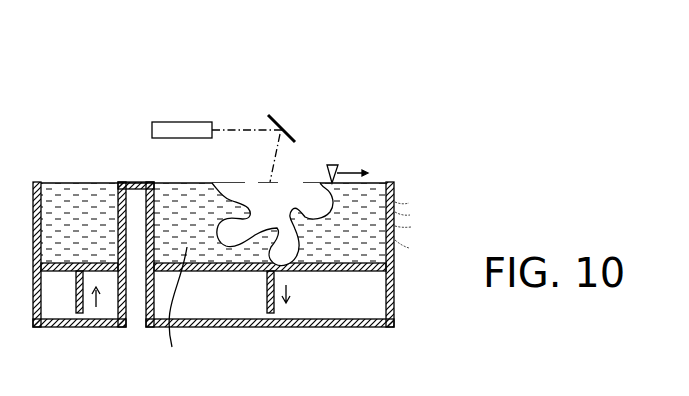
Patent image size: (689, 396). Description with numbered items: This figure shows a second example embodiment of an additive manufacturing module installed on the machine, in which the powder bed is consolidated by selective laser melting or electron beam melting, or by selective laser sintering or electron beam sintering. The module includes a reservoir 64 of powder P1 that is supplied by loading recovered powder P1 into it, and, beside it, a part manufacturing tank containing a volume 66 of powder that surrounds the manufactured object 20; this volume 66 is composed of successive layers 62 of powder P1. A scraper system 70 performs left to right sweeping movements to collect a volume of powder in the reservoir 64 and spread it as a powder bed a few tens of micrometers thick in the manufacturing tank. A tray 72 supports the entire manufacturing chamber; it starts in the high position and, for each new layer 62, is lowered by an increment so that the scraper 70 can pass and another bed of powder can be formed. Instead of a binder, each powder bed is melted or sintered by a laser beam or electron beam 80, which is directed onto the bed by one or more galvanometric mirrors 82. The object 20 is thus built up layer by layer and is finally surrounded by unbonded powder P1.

The object 20 is at (302, 199).
The successive layers 62 is at (241, 254).
The reservoir 64 is at (80, 197).
The volume of powder 66 is at (165, 197).
The scraper system 70 is at (334, 165).
The tray 72 is at (267, 293).
The laser beam or electron beam 80 is at (180, 130).
The galvanometric mirror 82 is at (283, 120).
The powder P1 is at (171, 313).